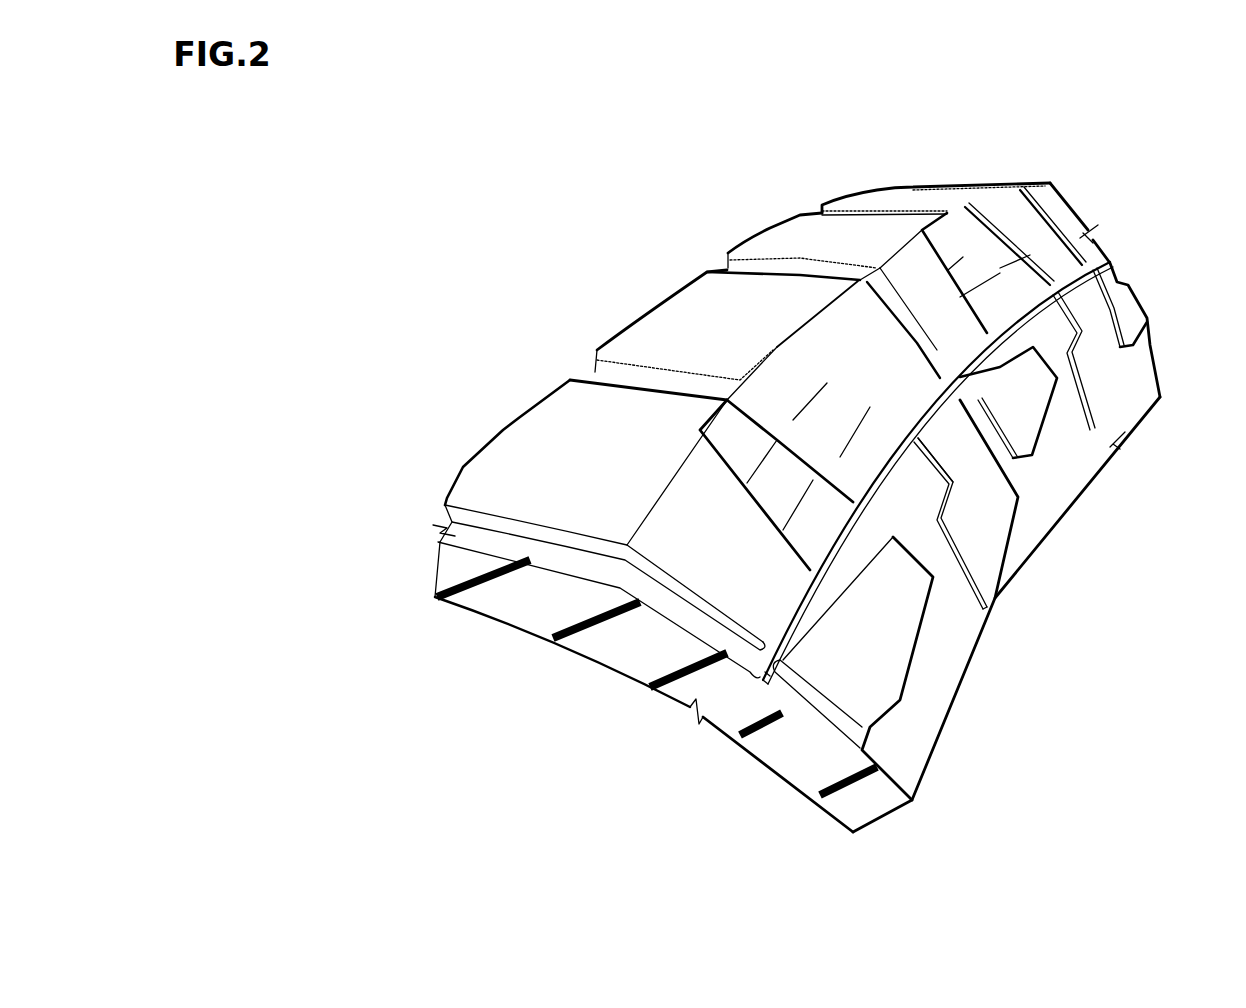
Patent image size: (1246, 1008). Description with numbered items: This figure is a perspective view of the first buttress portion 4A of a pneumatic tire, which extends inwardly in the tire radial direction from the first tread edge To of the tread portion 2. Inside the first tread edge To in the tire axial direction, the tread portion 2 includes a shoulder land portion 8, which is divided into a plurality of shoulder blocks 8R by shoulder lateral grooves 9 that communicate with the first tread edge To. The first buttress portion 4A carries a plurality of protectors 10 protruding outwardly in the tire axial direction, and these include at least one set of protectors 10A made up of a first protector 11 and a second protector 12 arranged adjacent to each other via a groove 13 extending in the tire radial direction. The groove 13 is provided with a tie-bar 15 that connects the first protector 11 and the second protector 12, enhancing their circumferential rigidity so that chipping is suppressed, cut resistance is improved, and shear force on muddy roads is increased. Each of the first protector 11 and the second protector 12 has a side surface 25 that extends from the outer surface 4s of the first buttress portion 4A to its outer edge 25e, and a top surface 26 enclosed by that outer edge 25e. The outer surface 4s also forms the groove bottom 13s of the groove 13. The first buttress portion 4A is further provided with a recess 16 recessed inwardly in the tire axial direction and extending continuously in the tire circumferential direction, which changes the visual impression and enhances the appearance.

The tread portion 2 is at (822, 170).
The first buttress portion 4A is at (1093, 178).
The outer surface 4s is at (937, 678).
The shoulder land portion 8 is at (458, 448).
The shoulder block 8R is at (677, 320).
The shoulder lateral groove 9 is at (753, 263).
The protector 10 is at (905, 720).
The set of protectors 10A is at (1140, 365).
The first protector 11 is at (1027, 403).
The second protector 12 is at (993, 567).
The groove 13 is at (983, 537).
The groove bottom 13s is at (987, 333).
The tie-bar 15 is at (963, 422).
The recess 16 is at (1100, 263).
The side surface 25 is at (973, 512).
The outer edge 25e is at (972, 560).
The top surface 26 is at (893, 540).
The first tread edge To is at (825, 310).